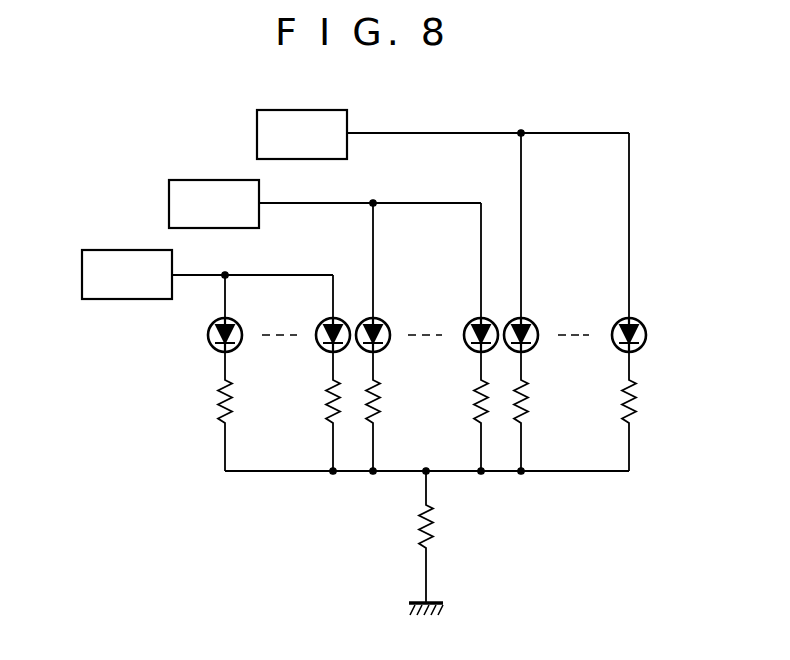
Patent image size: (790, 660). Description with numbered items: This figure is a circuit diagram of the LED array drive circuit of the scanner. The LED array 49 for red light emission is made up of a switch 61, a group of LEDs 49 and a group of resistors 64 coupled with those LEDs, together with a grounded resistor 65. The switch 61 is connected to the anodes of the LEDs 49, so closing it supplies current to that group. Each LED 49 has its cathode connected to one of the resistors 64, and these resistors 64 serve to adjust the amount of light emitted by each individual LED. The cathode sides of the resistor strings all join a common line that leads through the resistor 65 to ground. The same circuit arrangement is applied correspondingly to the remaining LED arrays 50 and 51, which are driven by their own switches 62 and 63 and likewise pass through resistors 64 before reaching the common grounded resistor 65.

The LED array for red light emission 49 is at (210, 335).
The LED array 50 is at (380, 322).
The LED array 51 is at (527, 322).
The switch 61 is at (82, 275).
The switch 62 is at (167, 203).
The switch 63 is at (256, 133).
The resistors 64 is at (210, 403).
The resistor 65 is at (436, 528).